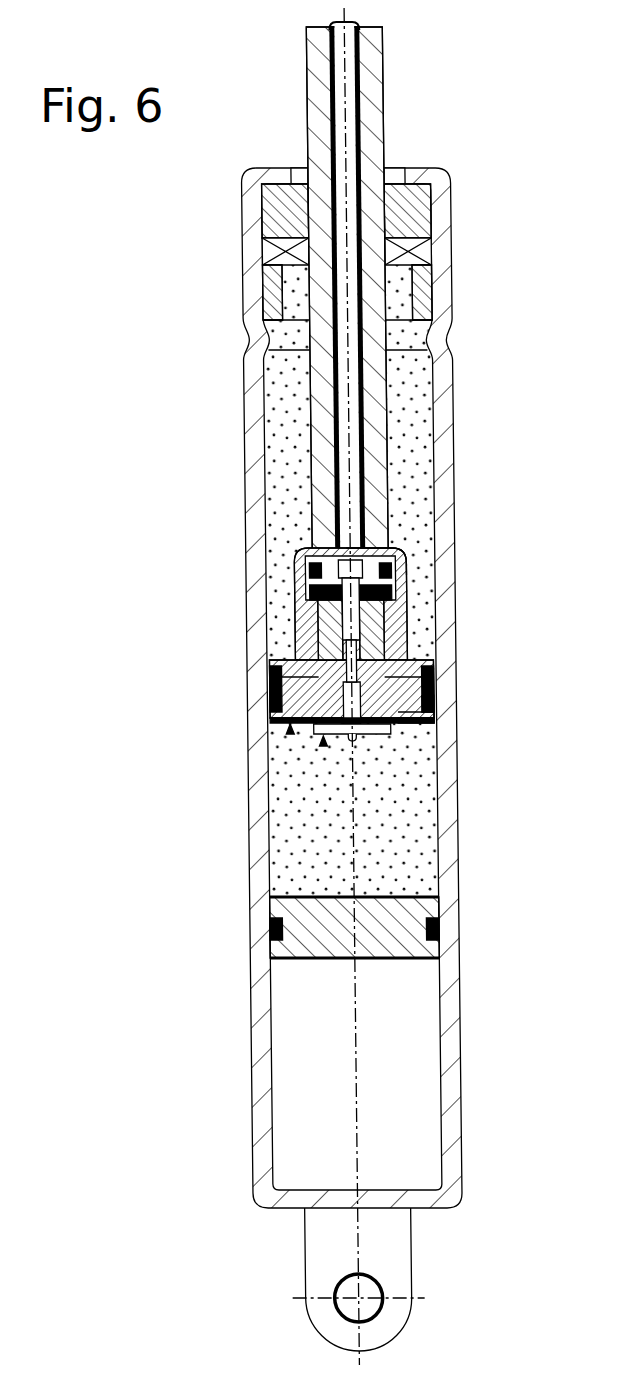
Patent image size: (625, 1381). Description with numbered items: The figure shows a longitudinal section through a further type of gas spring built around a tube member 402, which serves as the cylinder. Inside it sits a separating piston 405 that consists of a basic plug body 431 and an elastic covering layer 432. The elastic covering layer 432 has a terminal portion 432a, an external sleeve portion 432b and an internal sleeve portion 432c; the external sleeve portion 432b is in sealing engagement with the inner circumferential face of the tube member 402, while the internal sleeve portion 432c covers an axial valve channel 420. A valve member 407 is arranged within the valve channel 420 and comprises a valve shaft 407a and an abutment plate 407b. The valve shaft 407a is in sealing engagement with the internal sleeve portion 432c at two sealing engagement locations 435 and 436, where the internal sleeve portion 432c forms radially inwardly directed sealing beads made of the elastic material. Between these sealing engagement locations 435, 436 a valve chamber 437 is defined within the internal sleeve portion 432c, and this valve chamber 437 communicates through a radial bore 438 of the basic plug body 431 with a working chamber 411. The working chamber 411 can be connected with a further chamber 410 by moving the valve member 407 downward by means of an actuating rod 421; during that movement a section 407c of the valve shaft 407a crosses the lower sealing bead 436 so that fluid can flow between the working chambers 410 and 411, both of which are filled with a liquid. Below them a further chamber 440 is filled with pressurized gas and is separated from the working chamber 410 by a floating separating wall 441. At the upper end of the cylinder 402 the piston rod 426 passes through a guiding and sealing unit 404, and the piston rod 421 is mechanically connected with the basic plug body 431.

The tube member 402 is at (450, 845).
The guiding and sealing unit 404 is at (410, 226).
The separating piston 405 is at (440, 678).
The valve member 407 is at (355, 745).
The valve shaft 407a is at (340, 524).
The abutment plate 407b is at (378, 748).
The section of the valve shaft 407c is at (318, 657).
The further chamber 410 is at (410, 858).
The working chamber 411 is at (418, 463).
The axial valve channel 420 is at (322, 640).
The actuating rod 421 is at (362, 118).
The piston rod 426 is at (375, 395).
The basic plug body 431 is at (300, 677).
The elastic covering layer 432 is at (323, 742).
The terminal portion 432a is at (405, 742).
The external sleeve portion 432b is at (445, 697).
The internal sleeve portion 432c is at (290, 730).
The sealing engagement location 435 is at (395, 600).
The sealing engagement location 436 is at (420, 728).
The valve chamber 437 is at (363, 657).
The radial bore 438 is at (385, 628).
The further chamber 440 is at (415, 1085).
The floating separating wall 441 is at (395, 948).